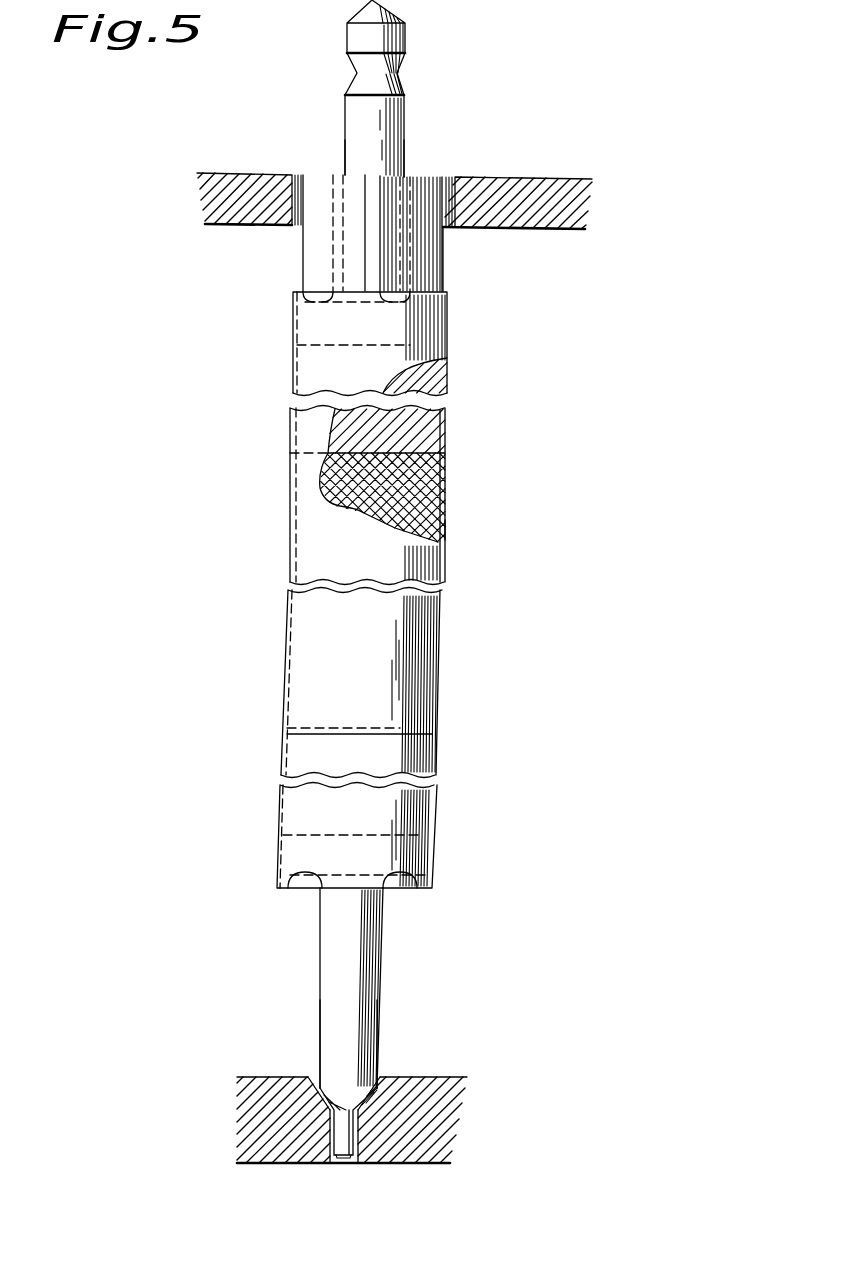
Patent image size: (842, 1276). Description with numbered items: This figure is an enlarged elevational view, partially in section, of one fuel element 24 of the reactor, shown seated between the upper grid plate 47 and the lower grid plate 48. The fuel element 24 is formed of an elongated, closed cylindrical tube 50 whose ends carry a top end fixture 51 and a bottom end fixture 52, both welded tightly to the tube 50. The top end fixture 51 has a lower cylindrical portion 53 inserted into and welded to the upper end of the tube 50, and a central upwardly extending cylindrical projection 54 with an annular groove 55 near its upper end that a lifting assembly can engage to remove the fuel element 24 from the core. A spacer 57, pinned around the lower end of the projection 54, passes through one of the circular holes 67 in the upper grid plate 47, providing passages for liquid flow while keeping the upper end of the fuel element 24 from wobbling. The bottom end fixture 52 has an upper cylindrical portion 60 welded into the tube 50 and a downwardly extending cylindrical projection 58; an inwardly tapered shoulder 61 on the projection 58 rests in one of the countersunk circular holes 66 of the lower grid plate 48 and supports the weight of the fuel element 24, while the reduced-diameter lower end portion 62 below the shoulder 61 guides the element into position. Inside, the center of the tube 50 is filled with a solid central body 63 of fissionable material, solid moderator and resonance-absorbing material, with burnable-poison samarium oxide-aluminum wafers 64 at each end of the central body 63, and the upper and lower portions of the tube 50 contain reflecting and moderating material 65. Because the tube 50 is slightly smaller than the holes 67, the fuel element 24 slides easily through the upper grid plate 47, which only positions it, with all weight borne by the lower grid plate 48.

The fuel element 24 is at (449, 528).
The upper grid plate 47 is at (598, 168).
The lower grid plate 48 is at (440, 1107).
The cylindrical tube 50 is at (452, 568).
The top end fixture 51 is at (405, 122).
The bottom end fixture 52 is at (320, 961).
The lower cylindrical portion 53 is at (410, 335).
The cylindrical projection 54 is at (404, 153).
The annular groove 55 is at (405, 62).
The spacer 57 is at (312, 258).
The cylindrical projection 58 is at (362, 1015).
The upper cylindrical portion 60 is at (310, 863).
The tapered shoulder 61 is at (333, 1088).
The lower end portion 62 is at (334, 1137).
The central body 63 is at (410, 488).
The samarium oxide-aluminum wafers 64 is at (445, 445).
The reflecting and moderating material 65 is at (448, 378).
The circular holes 66 is at (350, 1157).
The circular holes 67 is at (443, 229).